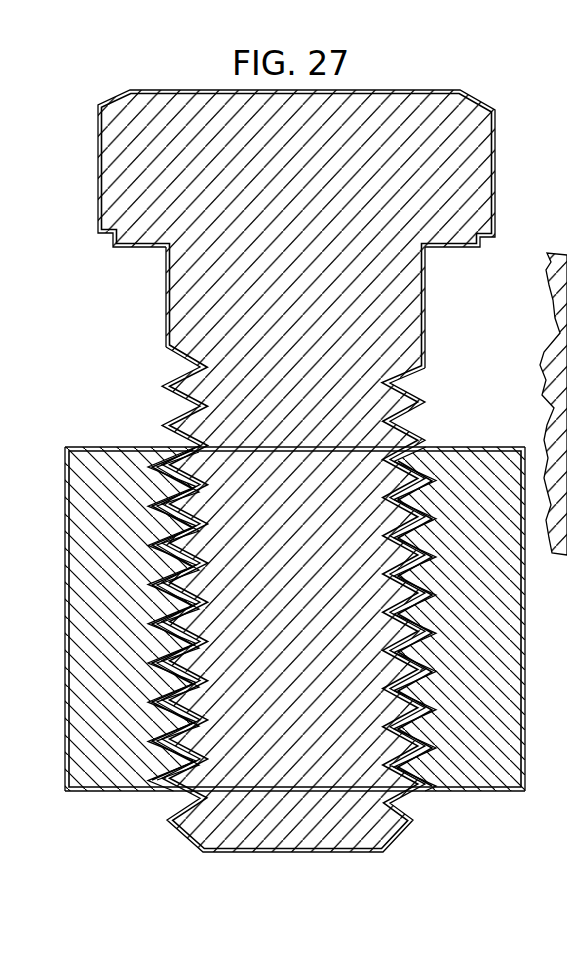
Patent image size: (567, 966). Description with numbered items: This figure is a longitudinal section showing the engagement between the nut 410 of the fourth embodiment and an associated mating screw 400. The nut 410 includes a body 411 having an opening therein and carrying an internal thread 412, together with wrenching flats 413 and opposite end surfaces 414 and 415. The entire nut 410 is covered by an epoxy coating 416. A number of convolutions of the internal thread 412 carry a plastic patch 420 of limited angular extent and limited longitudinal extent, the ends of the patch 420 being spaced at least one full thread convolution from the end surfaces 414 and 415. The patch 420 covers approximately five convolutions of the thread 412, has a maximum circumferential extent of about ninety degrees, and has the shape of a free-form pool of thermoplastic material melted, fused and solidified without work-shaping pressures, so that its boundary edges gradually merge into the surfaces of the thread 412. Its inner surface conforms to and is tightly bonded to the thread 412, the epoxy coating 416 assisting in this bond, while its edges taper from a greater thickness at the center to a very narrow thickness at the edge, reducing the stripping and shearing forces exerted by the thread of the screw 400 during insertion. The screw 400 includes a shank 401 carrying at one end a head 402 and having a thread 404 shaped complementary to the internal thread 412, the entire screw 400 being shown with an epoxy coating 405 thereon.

The screw 400 is at (147, 128).
The shank 401 is at (390, 312).
The head 402 is at (402, 122).
The thread 404 is at (408, 405).
The epoxy coating 405 is at (163, 302).
The nut 410 is at (105, 432).
The body 411 is at (87, 536).
The internal thread 412 is at (163, 602).
The wrenching flats 413 is at (66, 598).
The end surface 414 is at (130, 447).
The end surface 415 is at (112, 791).
The epoxy coating 416 is at (442, 460).
The plastic patch 420 is at (172, 643).